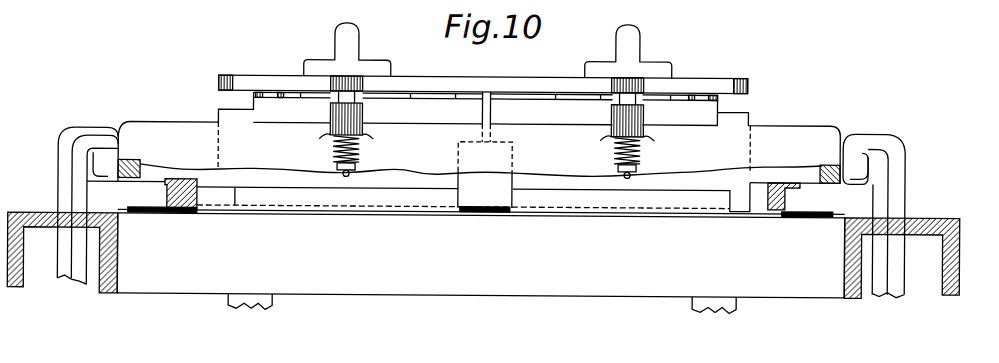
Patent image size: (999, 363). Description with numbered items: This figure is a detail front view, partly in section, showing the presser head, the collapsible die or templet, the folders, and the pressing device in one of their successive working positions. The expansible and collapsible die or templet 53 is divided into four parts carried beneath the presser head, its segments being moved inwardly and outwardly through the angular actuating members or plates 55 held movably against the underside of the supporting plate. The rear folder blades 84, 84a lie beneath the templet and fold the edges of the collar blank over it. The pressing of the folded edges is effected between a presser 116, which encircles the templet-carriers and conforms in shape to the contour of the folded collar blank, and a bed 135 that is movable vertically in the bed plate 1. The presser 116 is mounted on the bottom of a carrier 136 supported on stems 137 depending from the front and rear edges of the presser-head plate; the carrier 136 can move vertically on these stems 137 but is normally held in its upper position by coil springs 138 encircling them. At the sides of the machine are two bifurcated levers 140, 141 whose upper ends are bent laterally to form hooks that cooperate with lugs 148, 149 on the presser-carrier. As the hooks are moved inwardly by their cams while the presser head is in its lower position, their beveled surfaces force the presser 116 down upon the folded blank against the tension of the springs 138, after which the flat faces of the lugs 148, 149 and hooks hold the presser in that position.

The bed plate 1 is at (957, 258).
The die or templet 53 is at (220, 204).
The angular actuating members or plates 55 is at (437, 97).
The rear folder blade 84 is at (153, 215).
The rear folder blade 84a is at (822, 204).
The presser 116 is at (182, 192).
The bed 135 is at (481, 263).
The carrier 136 is at (780, 123).
The stems 137 is at (340, 177).
The coil springs 138 is at (359, 160).
The bifurcated lever 140 is at (83, 140).
The bifurcated lever 141 is at (243, 77).
The lug 148 is at (100, 175).
The lug 149 is at (860, 167).